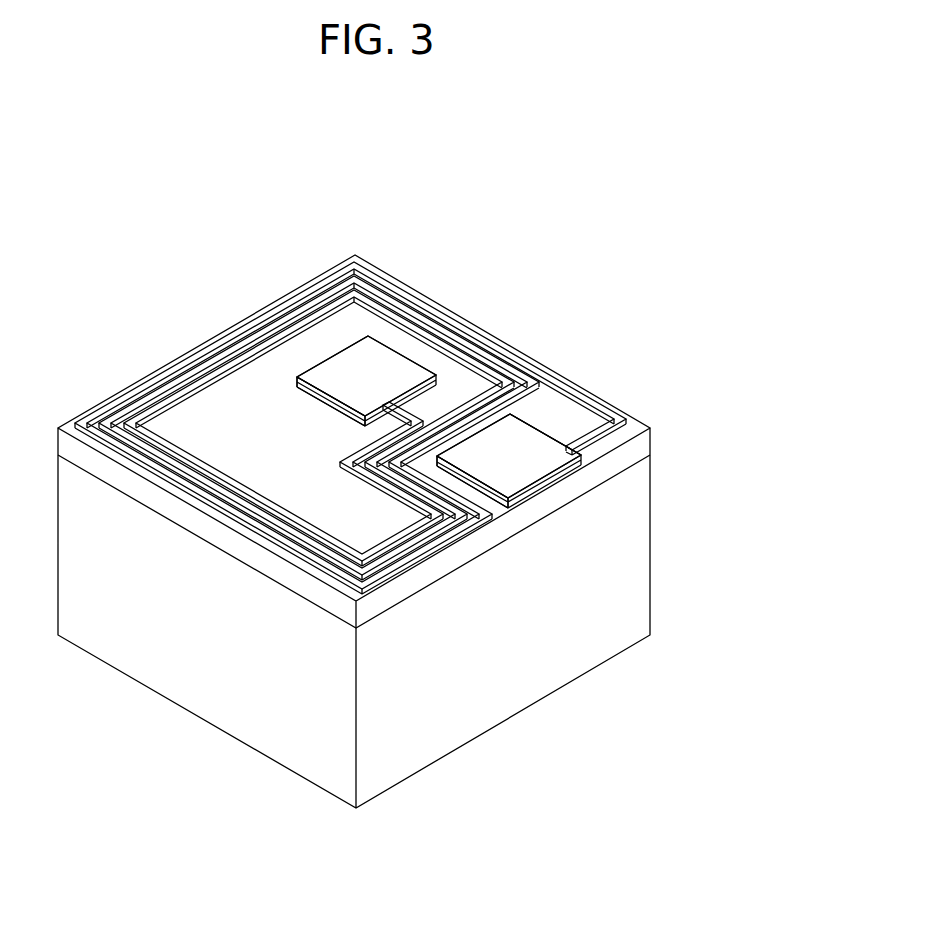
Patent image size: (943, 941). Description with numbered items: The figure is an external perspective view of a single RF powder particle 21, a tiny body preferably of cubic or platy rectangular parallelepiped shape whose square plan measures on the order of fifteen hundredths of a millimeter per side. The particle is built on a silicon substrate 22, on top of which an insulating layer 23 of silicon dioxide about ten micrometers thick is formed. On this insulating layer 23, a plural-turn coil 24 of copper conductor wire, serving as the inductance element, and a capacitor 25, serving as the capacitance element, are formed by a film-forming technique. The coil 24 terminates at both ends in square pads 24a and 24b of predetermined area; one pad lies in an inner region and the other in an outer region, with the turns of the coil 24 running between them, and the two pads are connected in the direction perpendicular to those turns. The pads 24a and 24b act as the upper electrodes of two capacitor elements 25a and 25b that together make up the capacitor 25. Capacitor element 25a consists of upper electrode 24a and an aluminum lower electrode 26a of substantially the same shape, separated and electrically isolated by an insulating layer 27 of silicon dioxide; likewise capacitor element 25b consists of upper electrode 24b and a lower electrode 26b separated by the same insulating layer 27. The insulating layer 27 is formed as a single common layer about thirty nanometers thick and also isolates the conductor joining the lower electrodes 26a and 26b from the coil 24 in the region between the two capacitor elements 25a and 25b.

The RF powder particle 21 is at (628, 404).
The substrate 22 is at (640, 553).
The insulating layer 23 is at (653, 440).
The coil 24 is at (462, 302).
The pad 24a is at (375, 362).
The pad 24b is at (522, 466).
The capacitor 25 is at (552, 435).
The capacitor element 25a is at (320, 355).
The capacitor element 25b is at (583, 425).
The lower electrode 26a is at (328, 396).
The lower electrode 26b is at (490, 500).
The insulating layer 27 is at (541, 422).